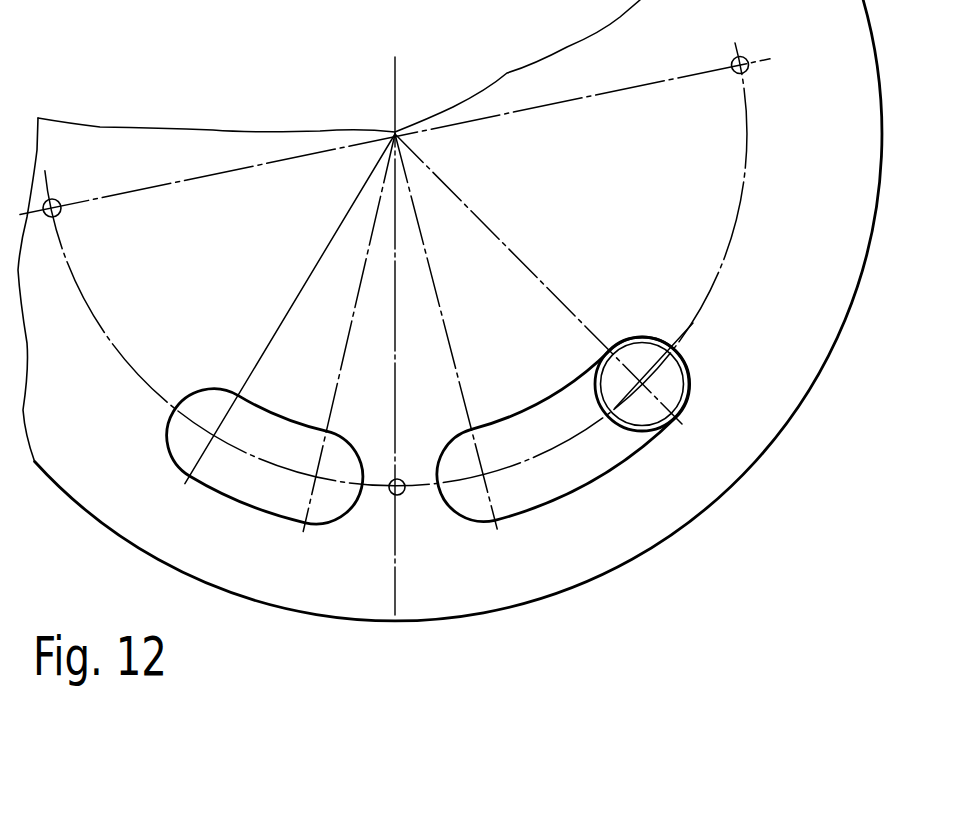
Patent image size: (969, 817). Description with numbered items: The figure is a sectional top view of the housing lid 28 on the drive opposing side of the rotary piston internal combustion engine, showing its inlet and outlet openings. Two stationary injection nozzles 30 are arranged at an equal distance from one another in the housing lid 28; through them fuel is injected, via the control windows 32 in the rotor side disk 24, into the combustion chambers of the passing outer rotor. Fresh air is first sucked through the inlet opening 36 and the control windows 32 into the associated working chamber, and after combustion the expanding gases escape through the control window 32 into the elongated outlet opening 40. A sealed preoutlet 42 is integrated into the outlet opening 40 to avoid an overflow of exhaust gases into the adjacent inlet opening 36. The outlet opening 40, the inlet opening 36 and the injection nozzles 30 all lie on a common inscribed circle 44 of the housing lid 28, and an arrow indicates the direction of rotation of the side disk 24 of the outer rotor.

The rotor side disk 24 is at (640, 232).
The housing lid 28 is at (563, 170).
The injection nozzle 30 is at (62, 200).
The control window 32 is at (516, 0).
The inlet opening 36 is at (275, 425).
The outlet opening 40 is at (526, 432).
The preoutlet 42 is at (640, 357).
The inscribed circle 44 is at (157, 297).